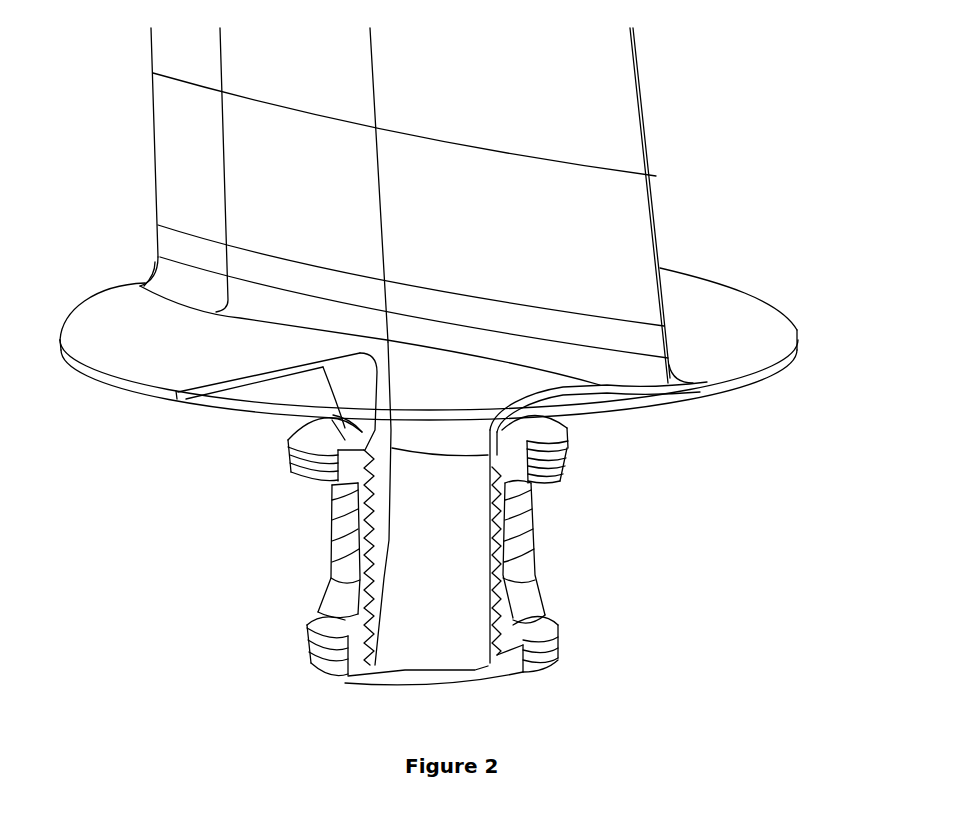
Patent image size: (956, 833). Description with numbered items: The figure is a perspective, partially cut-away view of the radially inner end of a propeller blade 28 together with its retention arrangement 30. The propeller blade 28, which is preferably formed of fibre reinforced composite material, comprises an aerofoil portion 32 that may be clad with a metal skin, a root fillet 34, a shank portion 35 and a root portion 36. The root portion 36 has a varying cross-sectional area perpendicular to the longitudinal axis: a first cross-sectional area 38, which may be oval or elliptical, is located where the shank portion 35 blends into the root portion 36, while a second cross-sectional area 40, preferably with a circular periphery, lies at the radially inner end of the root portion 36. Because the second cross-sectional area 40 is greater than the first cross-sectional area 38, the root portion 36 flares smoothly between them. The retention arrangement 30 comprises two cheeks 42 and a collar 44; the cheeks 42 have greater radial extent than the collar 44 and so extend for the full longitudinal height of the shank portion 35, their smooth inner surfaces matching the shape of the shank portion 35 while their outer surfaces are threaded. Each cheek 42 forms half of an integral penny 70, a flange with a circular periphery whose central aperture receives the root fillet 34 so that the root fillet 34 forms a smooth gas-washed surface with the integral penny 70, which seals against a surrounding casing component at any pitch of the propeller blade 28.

The propeller blade 28 is at (148, 112).
The retention arrangement 30 is at (217, 503).
The aerofoil portion 32 is at (643, 130).
The root fillet 34 is at (614, 363).
The shank portion 35 is at (483, 387).
The root portion 36 is at (436, 561).
The first cross-sectional area 38 is at (440, 457).
The second cross-sectional area 40 is at (405, 675).
The cheek 42 is at (383, 537).
The collar 44 is at (517, 553).
The integral penny 70 is at (127, 313).